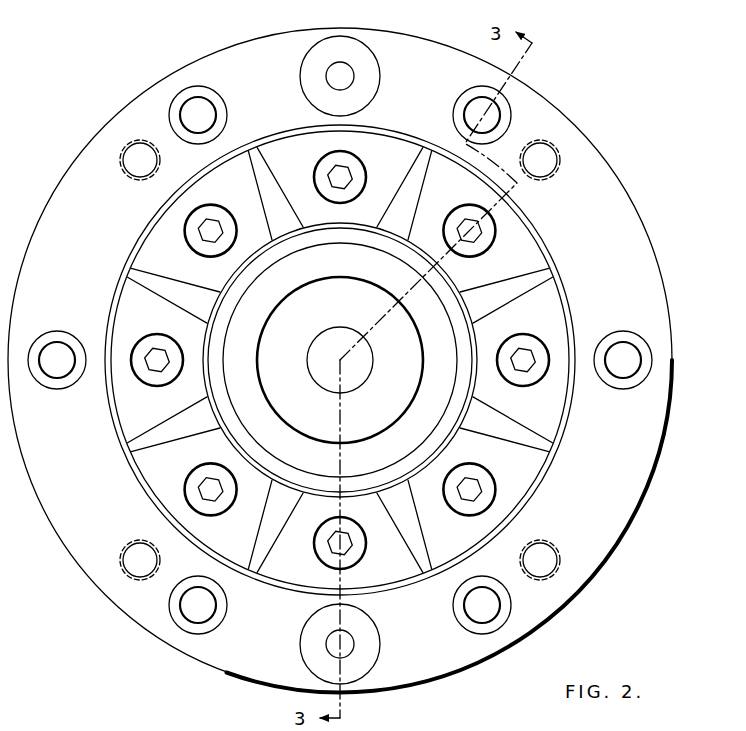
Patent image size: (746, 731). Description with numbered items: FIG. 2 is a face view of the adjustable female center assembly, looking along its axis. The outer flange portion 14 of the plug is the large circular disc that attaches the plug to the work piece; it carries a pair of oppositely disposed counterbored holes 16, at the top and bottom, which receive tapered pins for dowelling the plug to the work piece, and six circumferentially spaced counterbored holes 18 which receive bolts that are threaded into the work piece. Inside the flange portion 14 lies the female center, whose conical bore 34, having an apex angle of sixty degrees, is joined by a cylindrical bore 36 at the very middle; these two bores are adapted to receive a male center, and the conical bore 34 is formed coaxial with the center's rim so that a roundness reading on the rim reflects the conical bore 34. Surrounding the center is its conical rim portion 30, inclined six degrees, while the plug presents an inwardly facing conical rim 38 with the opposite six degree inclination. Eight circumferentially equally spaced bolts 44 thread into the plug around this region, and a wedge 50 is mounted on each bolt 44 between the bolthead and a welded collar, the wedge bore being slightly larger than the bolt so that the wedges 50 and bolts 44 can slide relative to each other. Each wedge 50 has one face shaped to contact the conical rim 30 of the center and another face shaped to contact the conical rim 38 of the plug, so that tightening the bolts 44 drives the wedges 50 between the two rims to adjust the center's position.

The flange portion 14 is at (651, 488).
The counterbored holes 16 is at (350, 71).
The counterbored holes 18 is at (490, 119).
The conical rim portion 30 is at (290, 485).
The conical bore 34 is at (371, 294).
The cylindrical bore 36 is at (316, 374).
The conical rim 38 is at (250, 572).
The bolts 44 is at (214, 218).
The wedge 50 is at (429, 197).